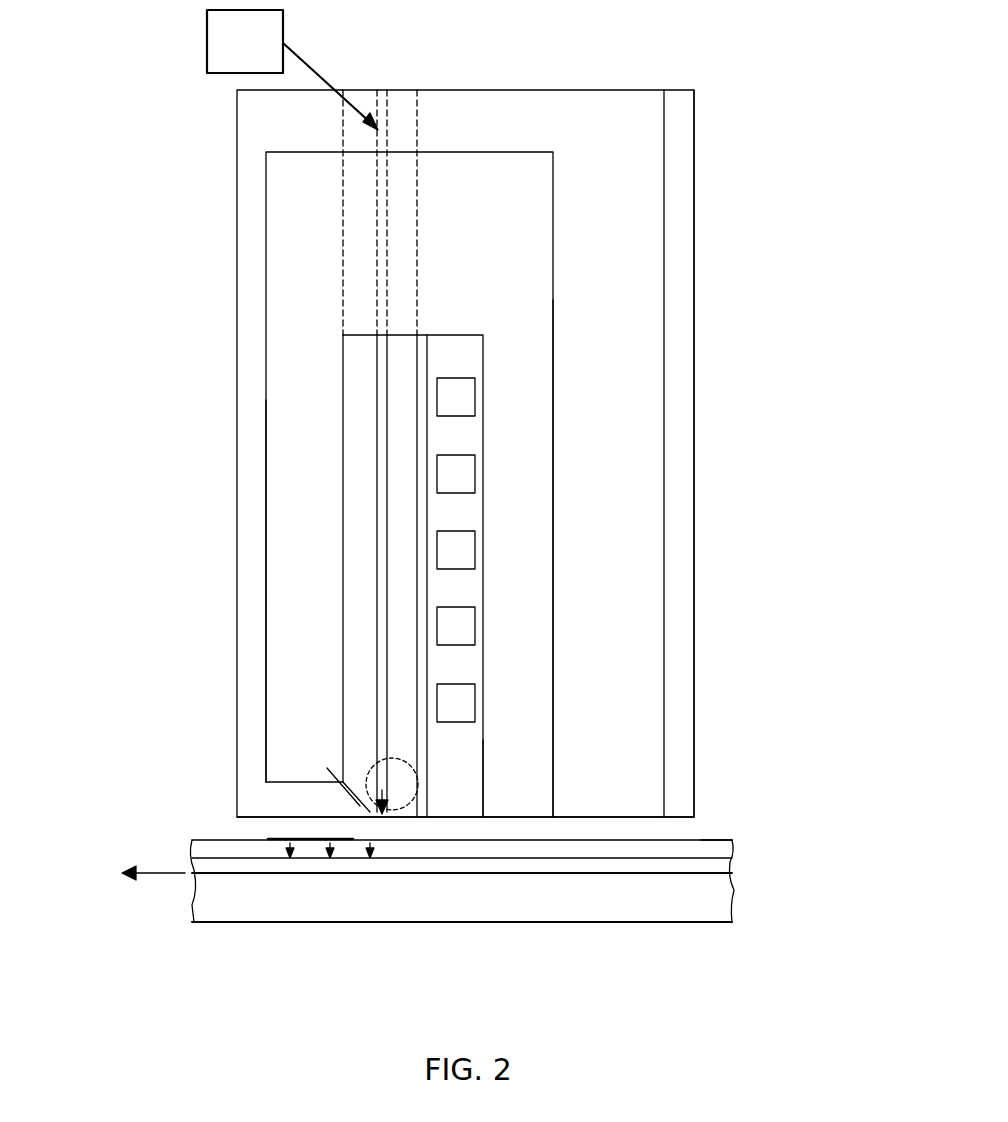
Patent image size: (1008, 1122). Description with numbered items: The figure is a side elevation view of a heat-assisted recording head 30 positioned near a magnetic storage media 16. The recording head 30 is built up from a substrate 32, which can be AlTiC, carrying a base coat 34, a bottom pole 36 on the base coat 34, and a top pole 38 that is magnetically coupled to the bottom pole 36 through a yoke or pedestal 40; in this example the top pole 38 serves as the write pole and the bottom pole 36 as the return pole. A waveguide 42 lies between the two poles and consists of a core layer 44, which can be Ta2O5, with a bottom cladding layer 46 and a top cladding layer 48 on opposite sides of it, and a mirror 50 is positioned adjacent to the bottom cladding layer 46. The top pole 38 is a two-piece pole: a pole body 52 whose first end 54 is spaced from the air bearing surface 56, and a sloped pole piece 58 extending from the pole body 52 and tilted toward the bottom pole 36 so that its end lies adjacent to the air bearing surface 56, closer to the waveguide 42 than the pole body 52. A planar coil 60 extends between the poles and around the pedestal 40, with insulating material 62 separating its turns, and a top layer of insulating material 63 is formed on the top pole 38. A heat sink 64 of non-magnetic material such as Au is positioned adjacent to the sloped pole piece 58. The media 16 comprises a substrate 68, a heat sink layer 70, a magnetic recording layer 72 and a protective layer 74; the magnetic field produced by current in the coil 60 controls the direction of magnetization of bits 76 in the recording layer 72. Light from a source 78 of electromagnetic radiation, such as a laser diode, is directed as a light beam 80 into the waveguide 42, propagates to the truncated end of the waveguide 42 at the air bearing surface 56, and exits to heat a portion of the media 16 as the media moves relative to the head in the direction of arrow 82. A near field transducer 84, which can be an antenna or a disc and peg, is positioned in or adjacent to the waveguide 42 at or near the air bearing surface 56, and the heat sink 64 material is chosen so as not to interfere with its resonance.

The magnetic storage media 16 is at (733, 827).
The recording head 30 is at (185, 172).
The substrate 32 is at (680, 106).
The base coat 34 is at (616, 112).
The bottom pole 36 is at (540, 511).
The top pole 38 is at (276, 553).
The pedestal 40 is at (478, 165).
The waveguide 42 is at (343, 88).
The core layer 44 is at (386, 425).
The bottom cladding layer 46 is at (396, 375).
The top cladding layer 48 is at (358, 487).
The mirror 50 is at (418, 340).
The pole body 52 is at (276, 672).
The first end 54 is at (282, 790).
The air bearing surface 56 is at (462, 818).
The sloped pole piece 58 is at (353, 802).
The planar coil 60 is at (468, 548).
The insulating material 62 is at (473, 772).
The top layer of insulating material 63 is at (250, 253).
The heat sink 64 is at (405, 758).
The substrate 68 is at (670, 902).
The heat sink layer 70 is at (742, 883).
The magnetic recording layer 72 is at (735, 846).
The protective layer 74 is at (710, 838).
The bits 76 is at (290, 855).
The source of electromagnetic radiation 78 is at (207, 44).
The light beam 80 is at (318, 70).
The arrow 82 is at (157, 878).
The near field transducer 84 is at (414, 790).